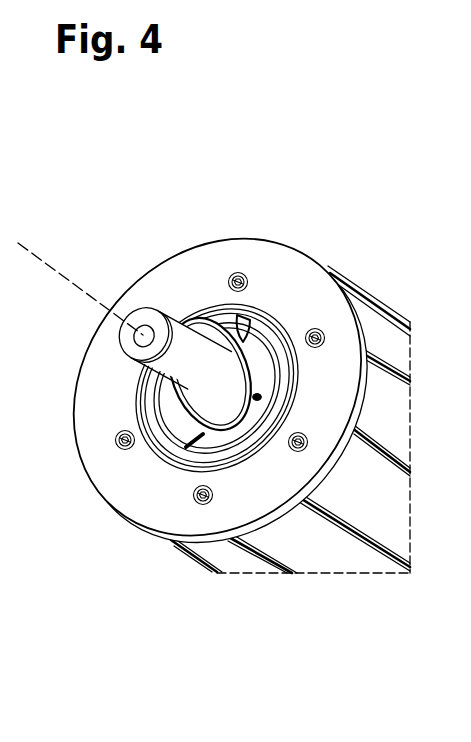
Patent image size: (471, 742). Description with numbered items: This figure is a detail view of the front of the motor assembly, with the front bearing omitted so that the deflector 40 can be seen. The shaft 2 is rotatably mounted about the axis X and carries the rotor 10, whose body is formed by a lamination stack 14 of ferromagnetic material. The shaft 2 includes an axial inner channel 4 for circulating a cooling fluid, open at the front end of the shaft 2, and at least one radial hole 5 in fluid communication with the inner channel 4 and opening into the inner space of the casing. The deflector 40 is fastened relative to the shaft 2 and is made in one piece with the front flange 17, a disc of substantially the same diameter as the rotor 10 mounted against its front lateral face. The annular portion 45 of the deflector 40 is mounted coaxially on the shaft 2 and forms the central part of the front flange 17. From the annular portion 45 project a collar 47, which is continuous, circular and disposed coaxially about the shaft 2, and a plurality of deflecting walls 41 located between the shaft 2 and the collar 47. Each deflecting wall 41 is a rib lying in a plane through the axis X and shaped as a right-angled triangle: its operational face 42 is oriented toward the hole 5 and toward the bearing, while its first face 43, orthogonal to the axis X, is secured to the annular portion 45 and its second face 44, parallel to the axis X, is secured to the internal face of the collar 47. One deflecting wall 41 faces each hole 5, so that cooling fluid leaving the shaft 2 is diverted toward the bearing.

The shaft 2 is at (139, 303).
The inner channel 4 is at (122, 338).
The hole 5 is at (264, 396).
The rotor 10 is at (289, 466).
The lamination stack 14 is at (377, 328).
The front flange 17 is at (233, 212).
The deflector 40 is at (235, 407).
The deflecting wall 41 is at (183, 458).
The operational face 42 is at (208, 300).
The first face 43 is at (268, 340).
The second face 44 is at (257, 315).
The annular portion 45 is at (180, 434).
The collar 47 is at (250, 442).
The axis X is at (57, 270).